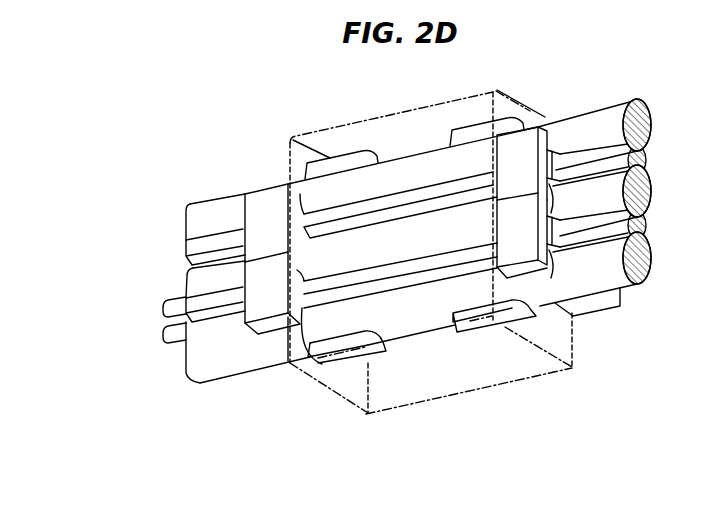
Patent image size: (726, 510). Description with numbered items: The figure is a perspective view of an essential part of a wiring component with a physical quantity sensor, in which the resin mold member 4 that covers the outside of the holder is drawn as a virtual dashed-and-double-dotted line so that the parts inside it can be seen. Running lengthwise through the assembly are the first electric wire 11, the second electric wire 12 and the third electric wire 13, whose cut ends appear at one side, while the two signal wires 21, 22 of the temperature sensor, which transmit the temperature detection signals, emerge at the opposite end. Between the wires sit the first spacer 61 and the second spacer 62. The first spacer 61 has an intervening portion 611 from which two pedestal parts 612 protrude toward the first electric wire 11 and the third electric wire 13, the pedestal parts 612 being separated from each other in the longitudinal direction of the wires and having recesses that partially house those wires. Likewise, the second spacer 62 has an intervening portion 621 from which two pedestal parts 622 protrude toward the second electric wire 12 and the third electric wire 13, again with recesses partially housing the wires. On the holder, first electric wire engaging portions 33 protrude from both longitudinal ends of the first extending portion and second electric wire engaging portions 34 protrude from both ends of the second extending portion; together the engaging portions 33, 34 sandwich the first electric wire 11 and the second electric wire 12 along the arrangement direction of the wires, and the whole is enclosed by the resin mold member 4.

The resin mold member 4 is at (377, 113).
The first electric wire 11 is at (647, 120).
The second electric wire 12 is at (653, 257).
The third electric wire 13 is at (640, 197).
The signal wire 21 is at (173, 312).
The signal wire 22 is at (170, 338).
The first electric wire engaging portion 33 is at (343, 160).
The second electric wire engaging portion 34 is at (335, 358).
The first spacer 61 is at (180, 250).
The second spacer 62 is at (207, 328).
The intervening portion 611 is at (647, 160).
The pedestal part 612 is at (267, 195).
The intervening portion 621 is at (647, 227).
The pedestal part 622 is at (272, 325).